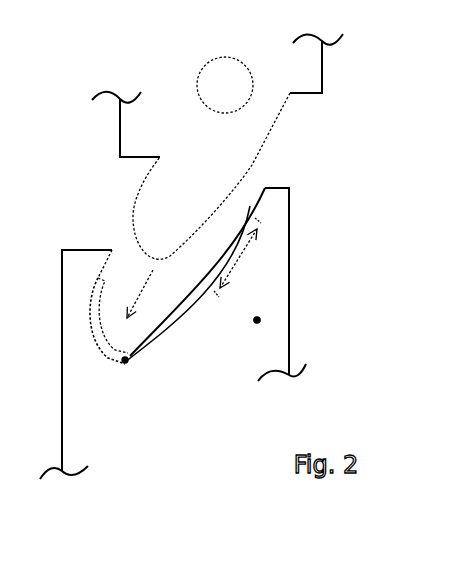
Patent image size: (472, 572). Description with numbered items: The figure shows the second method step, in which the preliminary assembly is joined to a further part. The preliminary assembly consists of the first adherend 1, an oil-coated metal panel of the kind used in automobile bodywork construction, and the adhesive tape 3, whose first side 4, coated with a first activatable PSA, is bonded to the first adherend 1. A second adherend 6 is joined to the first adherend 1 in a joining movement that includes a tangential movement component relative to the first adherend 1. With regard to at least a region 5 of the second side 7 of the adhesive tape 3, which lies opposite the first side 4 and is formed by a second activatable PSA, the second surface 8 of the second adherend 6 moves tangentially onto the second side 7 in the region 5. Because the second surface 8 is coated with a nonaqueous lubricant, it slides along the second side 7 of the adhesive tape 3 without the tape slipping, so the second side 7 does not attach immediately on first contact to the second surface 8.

The first adherend 1 is at (262, 320).
The adhesive tape 3 is at (125, 360).
The first side of the adhesive tape 4 is at (178, 329).
The region 5 is at (245, 252).
The second adherend 6 is at (225, 85).
The second side of the adhesive tape 7 is at (205, 262).
The second surface of the second adherend 8 is at (276, 132).